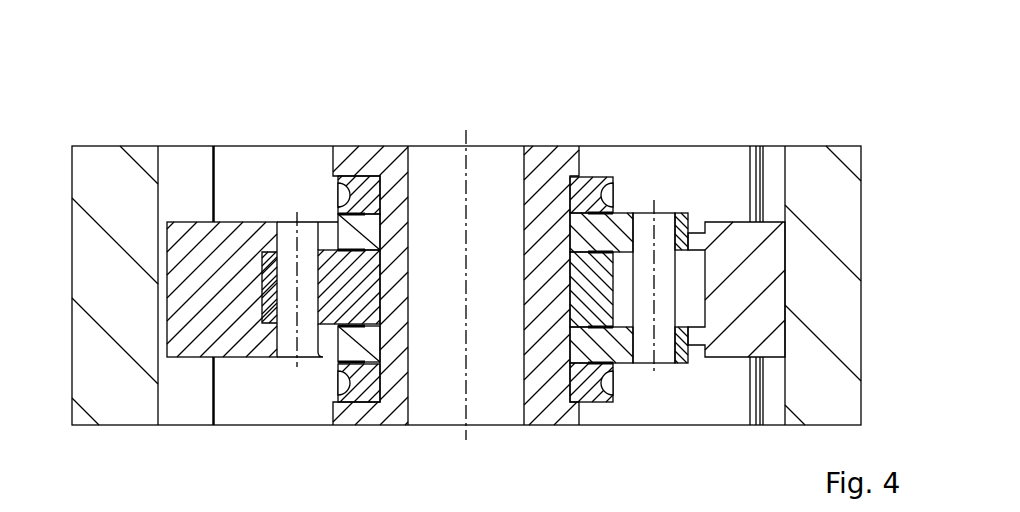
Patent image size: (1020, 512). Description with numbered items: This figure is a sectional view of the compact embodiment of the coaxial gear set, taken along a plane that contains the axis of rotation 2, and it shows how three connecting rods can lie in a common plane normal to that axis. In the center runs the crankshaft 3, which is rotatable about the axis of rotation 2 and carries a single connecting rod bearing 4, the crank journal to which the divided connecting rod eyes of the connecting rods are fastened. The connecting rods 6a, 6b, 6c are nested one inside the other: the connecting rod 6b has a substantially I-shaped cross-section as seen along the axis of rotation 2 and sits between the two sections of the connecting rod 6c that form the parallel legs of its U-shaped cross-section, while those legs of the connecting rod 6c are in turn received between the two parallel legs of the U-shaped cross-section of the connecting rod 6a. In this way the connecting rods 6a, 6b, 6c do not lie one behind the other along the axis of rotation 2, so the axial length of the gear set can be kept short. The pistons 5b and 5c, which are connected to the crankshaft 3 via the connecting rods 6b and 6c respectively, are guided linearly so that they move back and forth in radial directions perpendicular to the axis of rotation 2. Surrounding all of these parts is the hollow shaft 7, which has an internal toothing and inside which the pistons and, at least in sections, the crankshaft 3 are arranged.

The axis of rotation 2 is at (476, 412).
The crankshaft 3 is at (523, 222).
The connecting rod bearing 4 is at (547, 166).
The piston 5b is at (233, 277).
The piston 5c is at (719, 282).
The connecting rod 6a is at (360, 189).
The connecting rod 6b is at (362, 292).
The connecting rod 6c is at (597, 229).
The hollow shaft 7 is at (823, 173).